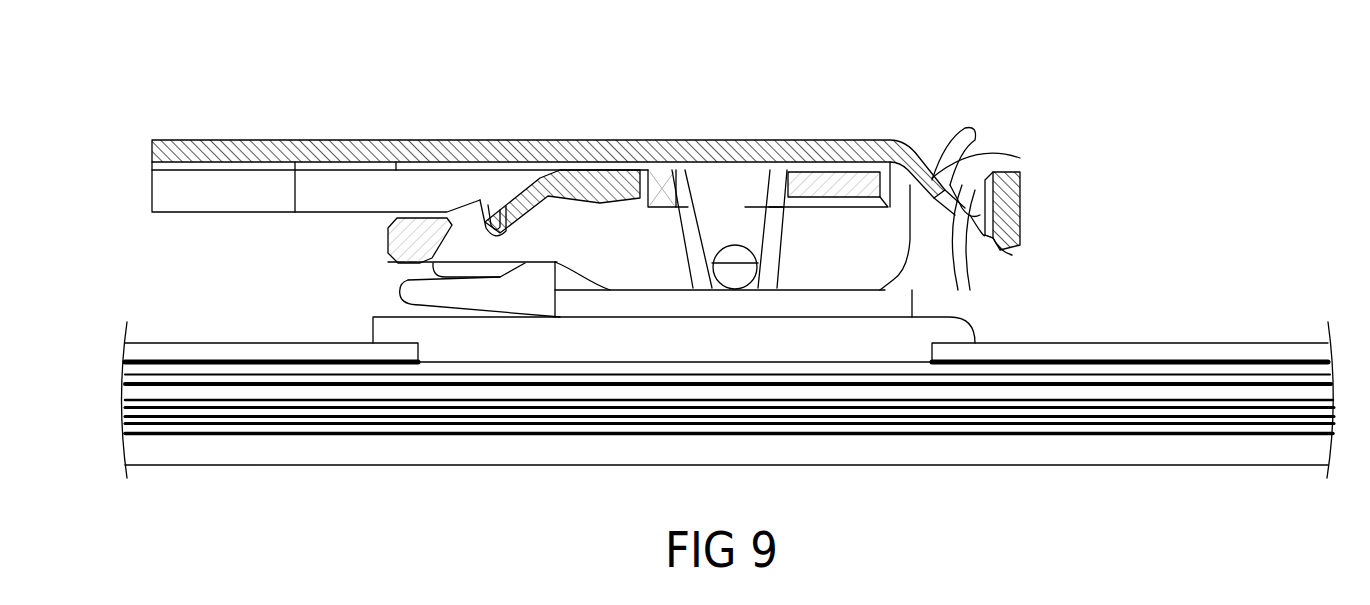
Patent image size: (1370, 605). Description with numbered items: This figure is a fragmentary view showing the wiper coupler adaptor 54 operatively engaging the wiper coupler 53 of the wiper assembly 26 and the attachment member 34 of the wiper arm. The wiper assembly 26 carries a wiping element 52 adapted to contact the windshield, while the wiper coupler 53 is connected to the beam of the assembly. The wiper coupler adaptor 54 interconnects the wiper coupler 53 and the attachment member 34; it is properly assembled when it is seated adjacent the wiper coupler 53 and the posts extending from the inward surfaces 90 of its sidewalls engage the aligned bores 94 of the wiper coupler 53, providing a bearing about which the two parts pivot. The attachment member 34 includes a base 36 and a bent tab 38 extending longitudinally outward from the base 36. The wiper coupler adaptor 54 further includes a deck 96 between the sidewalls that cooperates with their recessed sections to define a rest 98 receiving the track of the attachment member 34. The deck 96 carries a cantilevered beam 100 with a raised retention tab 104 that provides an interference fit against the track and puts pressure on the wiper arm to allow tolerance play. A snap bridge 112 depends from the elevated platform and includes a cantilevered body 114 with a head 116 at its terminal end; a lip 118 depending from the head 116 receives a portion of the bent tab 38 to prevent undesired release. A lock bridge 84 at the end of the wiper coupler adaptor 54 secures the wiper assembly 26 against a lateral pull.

The wiper assembly 26 is at (1208, 340).
The attachment member 34 is at (705, 128).
The base 36 is at (722, 170).
The bent tab 38 is at (1022, 160).
The wiping element 52 is at (1145, 468).
The wiper coupler 53 is at (958, 348).
The wiper coupler adaptor 54 is at (1010, 138).
The lock bridge 84 is at (405, 238).
The inward surface 90 is at (736, 255).
The aligned bores 94 is at (714, 290).
The deck 96 is at (660, 185).
The rest 98 is at (850, 170).
The cantilevered beam 100 is at (492, 205).
The retention tab 104 is at (610, 185).
The snap bridge 112 is at (970, 128).
The cantilevered body 114 is at (945, 210).
The head 116 is at (958, 128).
The lip 118 is at (985, 245).